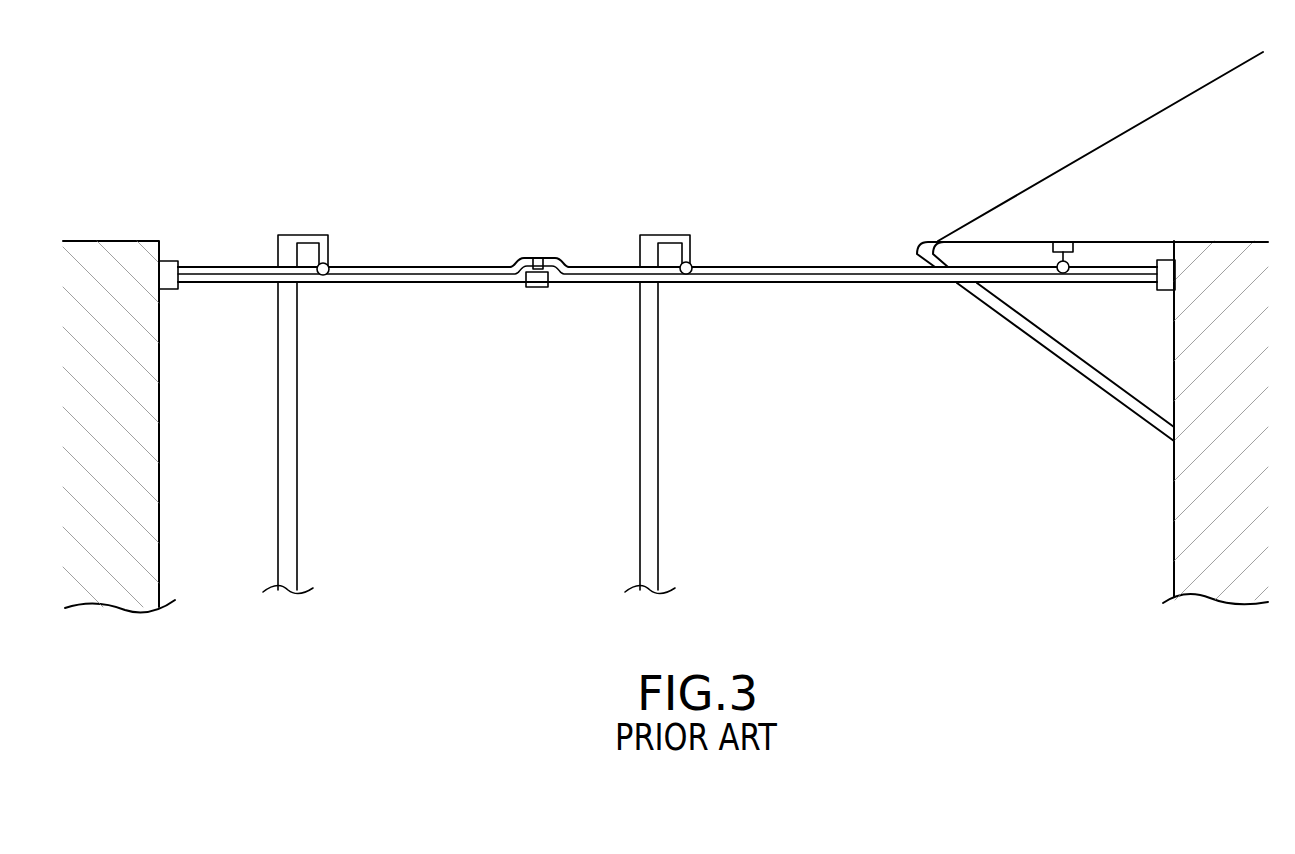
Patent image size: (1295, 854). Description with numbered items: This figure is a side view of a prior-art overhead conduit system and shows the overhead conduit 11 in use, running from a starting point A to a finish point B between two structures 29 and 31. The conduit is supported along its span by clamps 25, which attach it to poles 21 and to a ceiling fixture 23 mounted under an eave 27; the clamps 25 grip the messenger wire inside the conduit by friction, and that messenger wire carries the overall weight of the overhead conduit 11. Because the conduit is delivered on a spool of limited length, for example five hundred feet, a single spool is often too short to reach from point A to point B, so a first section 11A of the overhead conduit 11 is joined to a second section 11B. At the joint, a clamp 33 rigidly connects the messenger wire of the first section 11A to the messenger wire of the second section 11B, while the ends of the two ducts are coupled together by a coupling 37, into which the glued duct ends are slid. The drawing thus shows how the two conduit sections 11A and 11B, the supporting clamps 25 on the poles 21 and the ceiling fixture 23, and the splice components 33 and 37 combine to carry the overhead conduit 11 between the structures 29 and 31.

The overhead conduit 11 is at (602, 147).
The first section of the overhead conduit 11A is at (588, 260).
The second section of the overhead conduit 11B is at (482, 260).
The poles 21 is at (287, 425).
The ceiling fixture 23 is at (1073, 247).
The clamps 25 is at (338, 257).
The eave 27 is at (1182, 188).
The structure 29 is at (1235, 425).
The structure 31 is at (122, 422).
The clamp 33 is at (537, 258).
The coupling 37 is at (540, 287).
The starting point A is at (1163, 295).
The finish point B is at (176, 298).